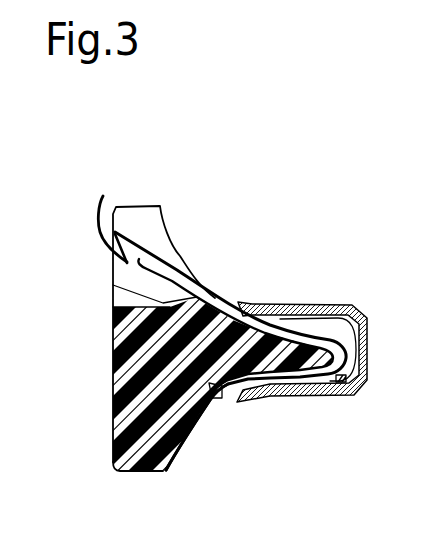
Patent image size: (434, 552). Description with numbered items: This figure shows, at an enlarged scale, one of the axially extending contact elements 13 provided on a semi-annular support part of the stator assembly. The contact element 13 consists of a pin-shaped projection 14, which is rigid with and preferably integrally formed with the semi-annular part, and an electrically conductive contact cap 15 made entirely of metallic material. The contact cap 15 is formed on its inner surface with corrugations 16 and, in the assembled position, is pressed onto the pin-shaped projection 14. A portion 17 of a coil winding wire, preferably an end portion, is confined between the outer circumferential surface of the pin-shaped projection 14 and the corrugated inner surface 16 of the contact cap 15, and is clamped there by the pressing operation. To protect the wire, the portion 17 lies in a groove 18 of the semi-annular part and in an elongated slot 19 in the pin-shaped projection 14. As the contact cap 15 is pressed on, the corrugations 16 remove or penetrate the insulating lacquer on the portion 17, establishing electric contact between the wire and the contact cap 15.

The contact element 13 is at (217, 292).
The pin-shaped projection 14 is at (184, 352).
The contact cap 15 is at (287, 394).
The corrugations 16 is at (345, 384).
The portion of a winding wire 17 is at (224, 392).
The groove 18 is at (103, 196).
The elongated slot 19 is at (336, 332).